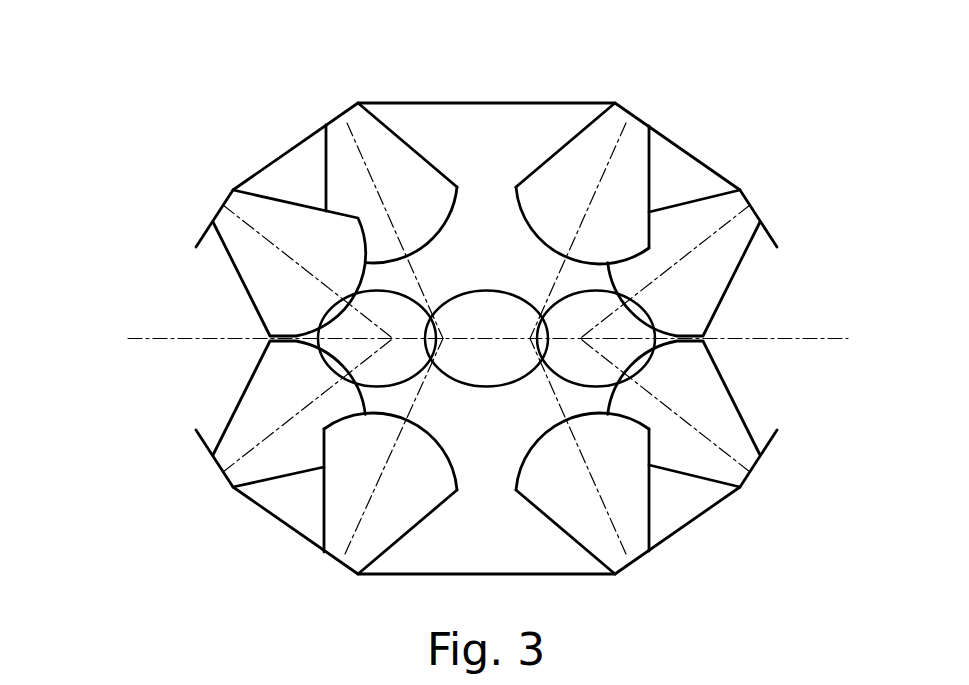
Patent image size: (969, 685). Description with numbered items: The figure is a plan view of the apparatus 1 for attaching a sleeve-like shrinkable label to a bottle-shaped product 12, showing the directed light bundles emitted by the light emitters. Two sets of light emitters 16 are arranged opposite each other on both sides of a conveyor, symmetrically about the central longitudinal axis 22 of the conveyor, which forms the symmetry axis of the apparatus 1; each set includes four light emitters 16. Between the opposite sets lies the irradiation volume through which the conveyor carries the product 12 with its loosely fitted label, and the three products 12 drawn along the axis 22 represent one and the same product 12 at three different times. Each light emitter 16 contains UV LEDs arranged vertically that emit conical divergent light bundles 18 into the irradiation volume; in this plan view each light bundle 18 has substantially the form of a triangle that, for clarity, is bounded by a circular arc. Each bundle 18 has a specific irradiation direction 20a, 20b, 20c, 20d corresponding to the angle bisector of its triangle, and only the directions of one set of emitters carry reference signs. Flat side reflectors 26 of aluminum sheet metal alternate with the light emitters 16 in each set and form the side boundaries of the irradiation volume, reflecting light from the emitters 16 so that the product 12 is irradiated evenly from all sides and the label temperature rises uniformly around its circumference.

The apparatus 1 is at (780, 121).
The product 12 is at (347, 353).
The light emitters 16 is at (353, 130).
The directed light bundles 18 is at (367, 127).
The irradiation direction 20a is at (313, 277).
The irradiation direction 20b is at (380, 197).
The irradiation direction 20c is at (590, 190).
The irradiation direction 20d is at (688, 254).
The central longitudinal axis 22 is at (800, 340).
The side reflectors 26 is at (275, 160).